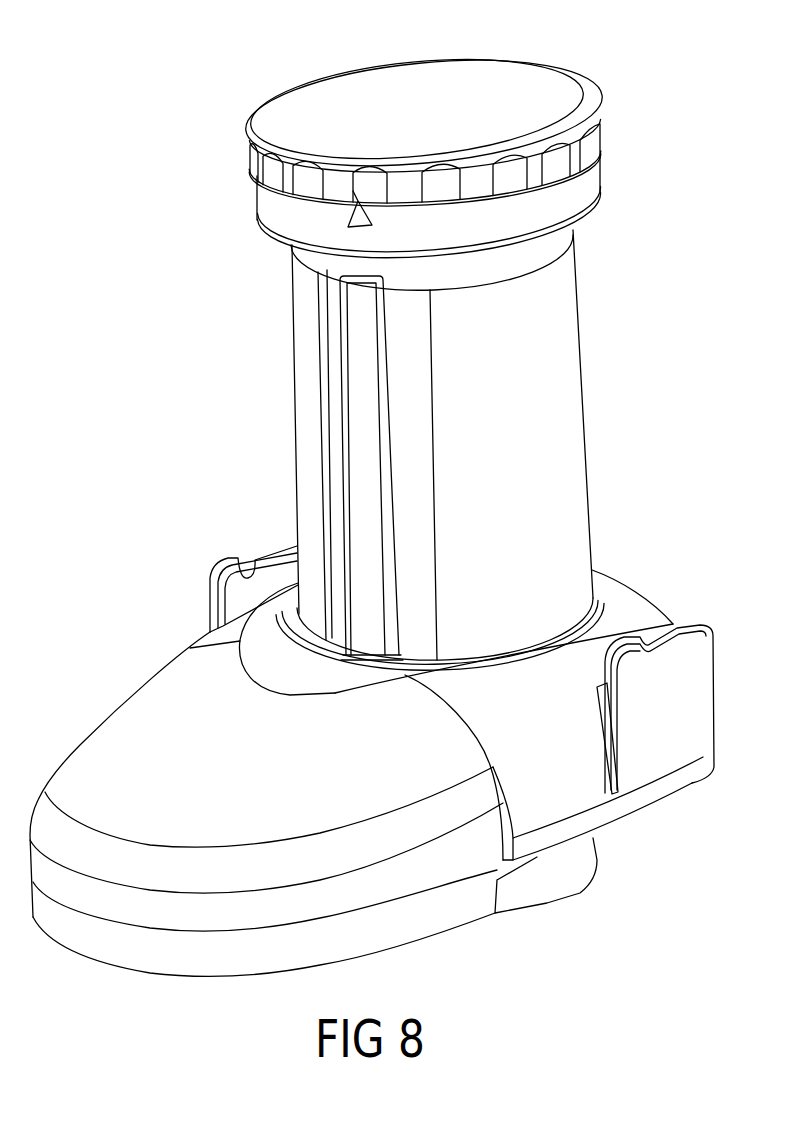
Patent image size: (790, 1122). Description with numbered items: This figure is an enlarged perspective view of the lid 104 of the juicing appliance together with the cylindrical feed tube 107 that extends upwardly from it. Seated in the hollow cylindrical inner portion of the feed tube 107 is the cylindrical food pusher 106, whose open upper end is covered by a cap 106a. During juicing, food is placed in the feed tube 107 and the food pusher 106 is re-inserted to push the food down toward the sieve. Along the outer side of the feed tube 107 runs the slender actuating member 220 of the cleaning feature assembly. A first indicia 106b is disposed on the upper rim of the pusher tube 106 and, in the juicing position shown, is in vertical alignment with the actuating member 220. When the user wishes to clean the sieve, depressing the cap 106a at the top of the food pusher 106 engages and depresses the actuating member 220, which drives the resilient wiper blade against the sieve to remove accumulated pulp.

The lid 104 is at (143, 708).
The cylindrical food pusher 106 is at (585, 187).
The cap 106a is at (395, 87).
The first indicia 106b is at (348, 222).
The cylindrical feed tube 107 is at (562, 446).
The actuating member 220 is at (355, 478).